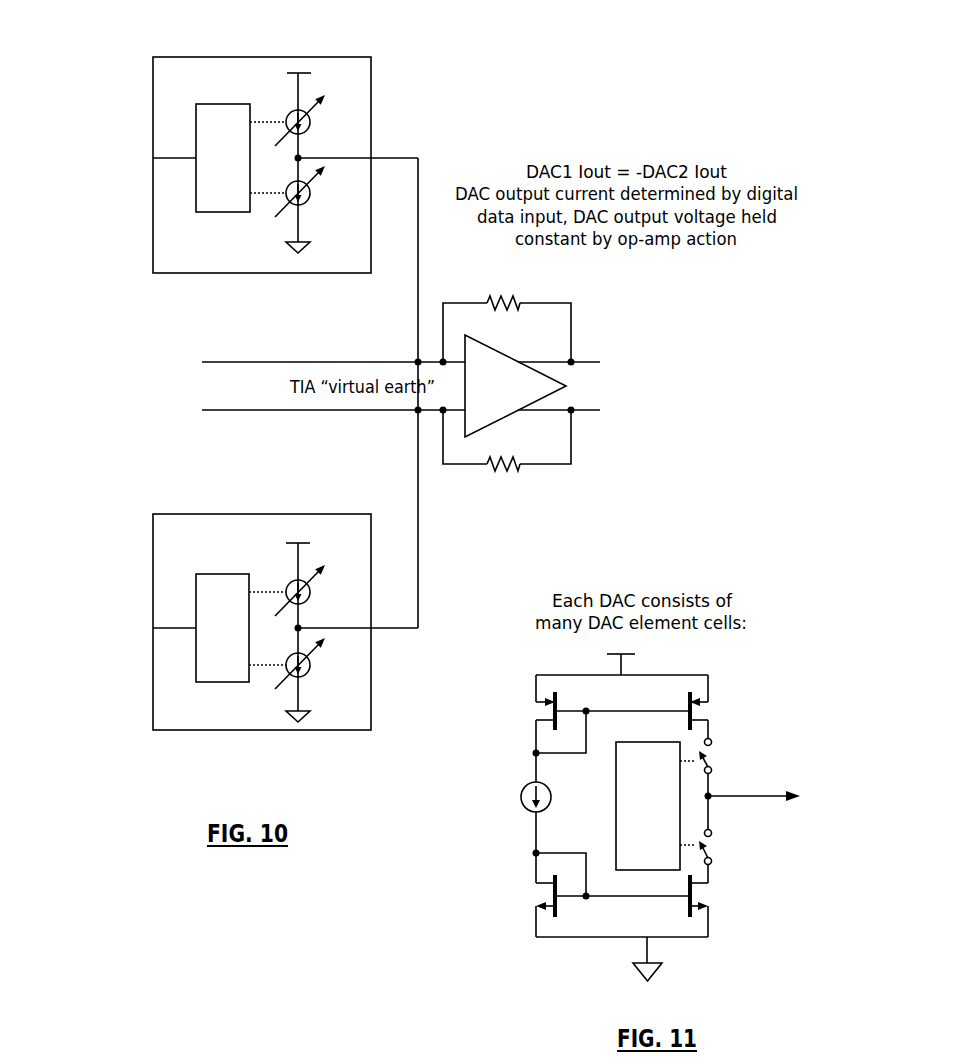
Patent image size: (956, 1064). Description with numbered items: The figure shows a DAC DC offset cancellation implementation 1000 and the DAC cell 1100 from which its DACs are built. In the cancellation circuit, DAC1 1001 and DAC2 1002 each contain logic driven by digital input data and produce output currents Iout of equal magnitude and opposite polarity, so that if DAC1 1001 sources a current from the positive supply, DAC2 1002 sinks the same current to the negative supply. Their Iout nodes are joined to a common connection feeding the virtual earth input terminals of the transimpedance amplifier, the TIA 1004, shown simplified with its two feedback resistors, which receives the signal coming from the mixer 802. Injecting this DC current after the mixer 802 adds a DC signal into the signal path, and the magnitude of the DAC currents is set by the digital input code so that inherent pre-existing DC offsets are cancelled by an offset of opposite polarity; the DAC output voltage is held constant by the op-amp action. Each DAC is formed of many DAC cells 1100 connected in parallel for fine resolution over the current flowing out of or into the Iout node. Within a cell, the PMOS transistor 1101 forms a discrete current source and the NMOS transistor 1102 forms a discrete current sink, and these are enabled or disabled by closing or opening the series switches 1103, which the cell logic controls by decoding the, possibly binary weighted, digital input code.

In FIG. 10, the mixer 802 is at (285, 390).
In FIG. 10, the DAC DC offset cancellation implementation 1000 is at (453, 147).
In FIG. 10, the DAC1 1001 is at (148, 142).
In FIG. 10, the DAC2 1002 is at (153, 585).
In FIG. 10, the TIA 1004 is at (520, 383).
In FIG. 11, the DAC cell 1100 is at (690, 813).
In FIG. 11, the PMOS transistor 1101 is at (718, 706).
In FIG. 11, the NMOS transistor 1102 is at (718, 901).
In FIG. 11, the series switches 1103 is at (727, 840).